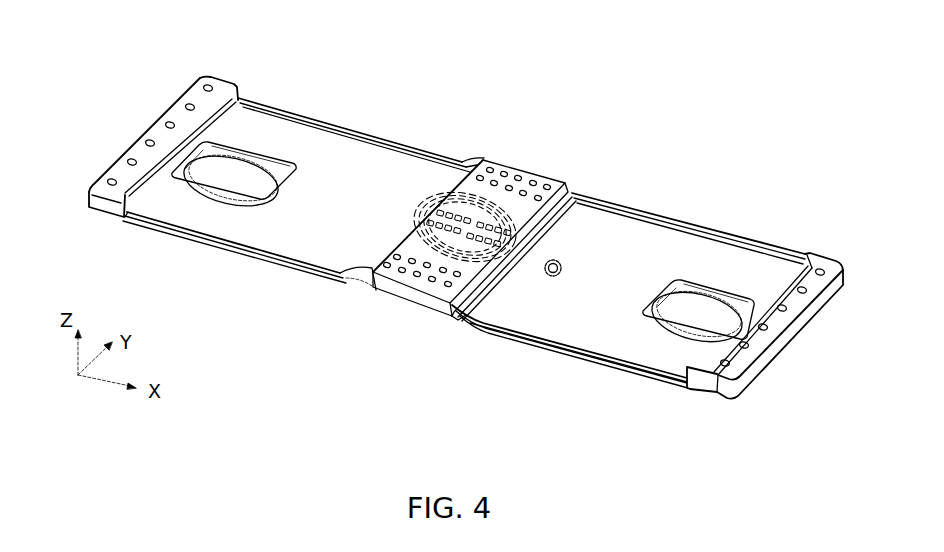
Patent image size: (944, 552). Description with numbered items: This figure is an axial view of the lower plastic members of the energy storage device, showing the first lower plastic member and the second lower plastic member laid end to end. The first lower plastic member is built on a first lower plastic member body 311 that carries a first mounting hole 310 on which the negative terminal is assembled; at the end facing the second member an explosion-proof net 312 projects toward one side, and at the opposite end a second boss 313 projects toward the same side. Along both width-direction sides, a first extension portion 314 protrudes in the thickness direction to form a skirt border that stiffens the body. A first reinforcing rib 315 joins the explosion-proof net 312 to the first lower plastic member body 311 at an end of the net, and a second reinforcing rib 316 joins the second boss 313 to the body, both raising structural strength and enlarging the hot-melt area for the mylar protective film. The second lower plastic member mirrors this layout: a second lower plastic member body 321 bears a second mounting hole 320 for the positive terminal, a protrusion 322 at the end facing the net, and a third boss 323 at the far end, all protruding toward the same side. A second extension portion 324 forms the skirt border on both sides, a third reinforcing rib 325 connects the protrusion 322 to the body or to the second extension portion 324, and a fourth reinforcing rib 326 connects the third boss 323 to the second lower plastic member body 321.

The first mounting hole 310 is at (220, 198).
The first lower plastic member body 311 is at (300, 118).
The explosion-proof net 312 is at (484, 168).
The second boss 313 is at (205, 94).
The first extension portion 314 is at (258, 265).
The first reinforcing rib 315 is at (348, 275).
The second reinforcing rib 316 is at (118, 203).
The second mounting hole 320 is at (712, 302).
The second lower plastic member body 321 is at (652, 240).
The protrusion 322 is at (574, 194).
The third boss 323 is at (730, 398).
The second extension portion 324 is at (548, 349).
The third reinforcing rib 325 is at (455, 314).
The fourth reinforcing rib 326 is at (692, 378).